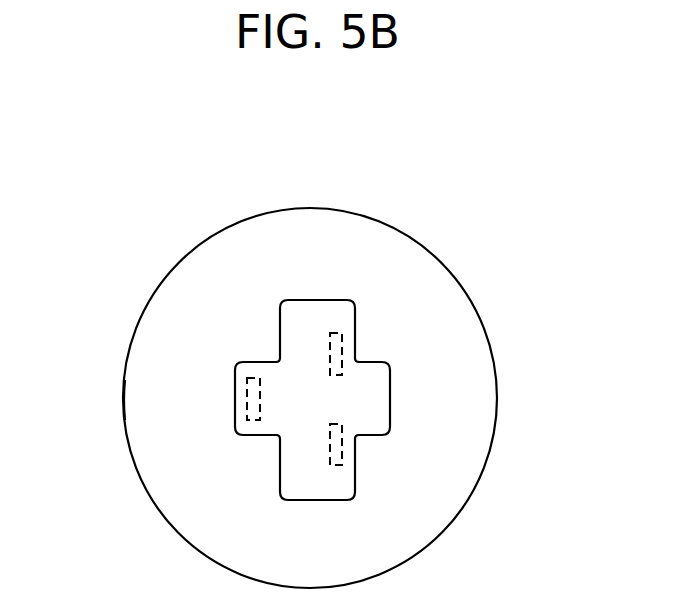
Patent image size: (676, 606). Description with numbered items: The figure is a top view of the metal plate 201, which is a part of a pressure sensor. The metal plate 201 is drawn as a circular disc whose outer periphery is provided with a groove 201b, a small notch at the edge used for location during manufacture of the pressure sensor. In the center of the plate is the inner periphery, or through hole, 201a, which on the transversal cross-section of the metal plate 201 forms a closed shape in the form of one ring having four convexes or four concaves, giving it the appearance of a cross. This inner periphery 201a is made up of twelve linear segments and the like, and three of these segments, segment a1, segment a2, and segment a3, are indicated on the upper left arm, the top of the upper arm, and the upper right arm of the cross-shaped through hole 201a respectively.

The metal plate 201 is at (200, 517).
The inner periphery (through hole) 201a is at (390, 392).
The groove 201b is at (124, 400).
The segment a1 is at (262, 362).
The segment a2 is at (320, 300).
The segment a3 is at (377, 370).